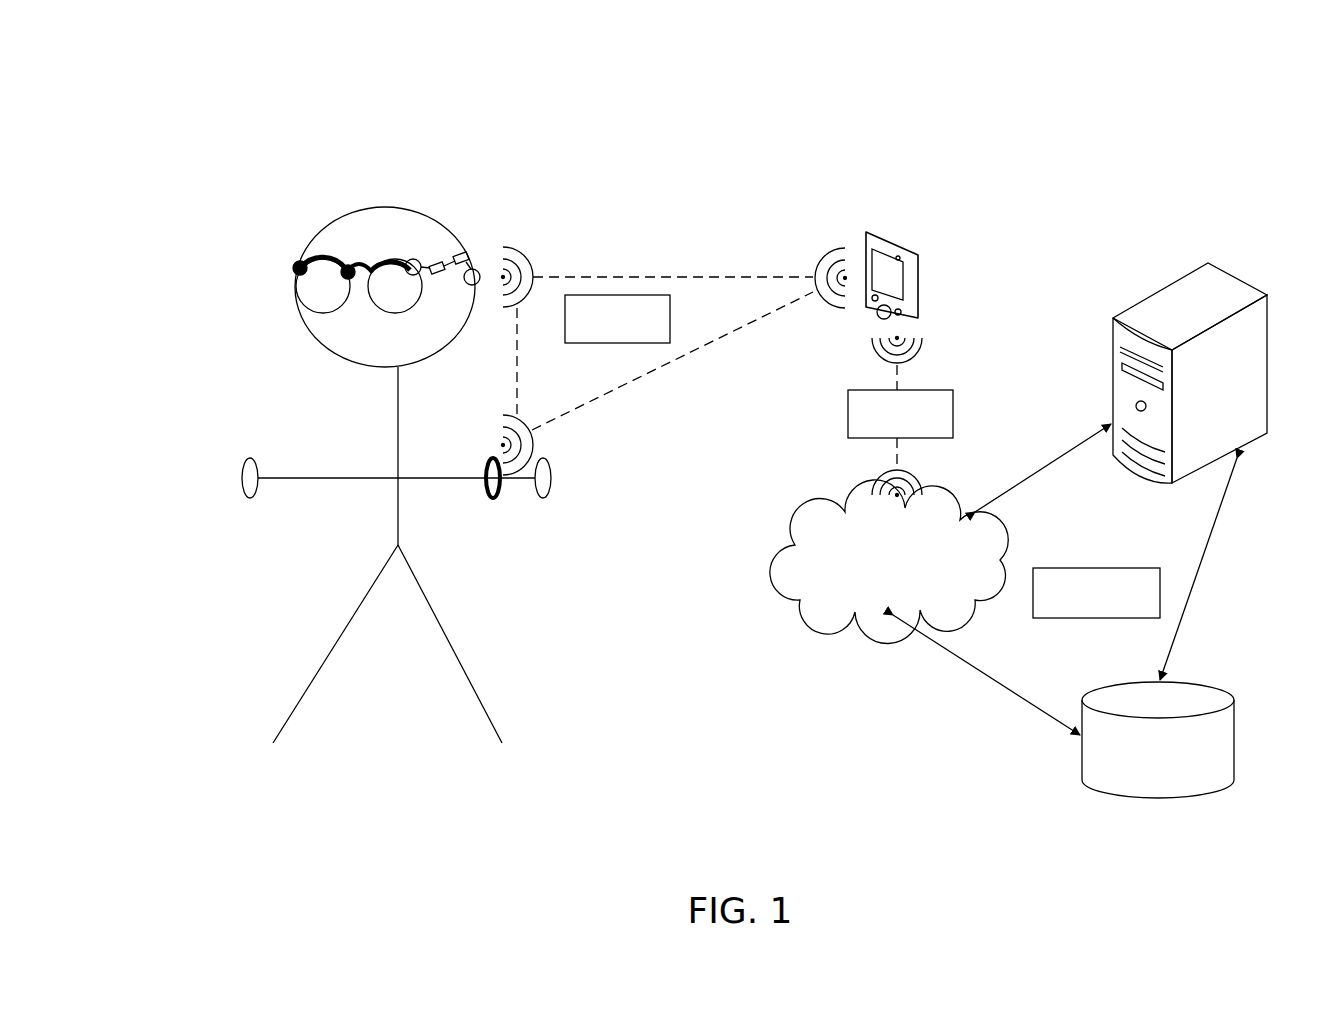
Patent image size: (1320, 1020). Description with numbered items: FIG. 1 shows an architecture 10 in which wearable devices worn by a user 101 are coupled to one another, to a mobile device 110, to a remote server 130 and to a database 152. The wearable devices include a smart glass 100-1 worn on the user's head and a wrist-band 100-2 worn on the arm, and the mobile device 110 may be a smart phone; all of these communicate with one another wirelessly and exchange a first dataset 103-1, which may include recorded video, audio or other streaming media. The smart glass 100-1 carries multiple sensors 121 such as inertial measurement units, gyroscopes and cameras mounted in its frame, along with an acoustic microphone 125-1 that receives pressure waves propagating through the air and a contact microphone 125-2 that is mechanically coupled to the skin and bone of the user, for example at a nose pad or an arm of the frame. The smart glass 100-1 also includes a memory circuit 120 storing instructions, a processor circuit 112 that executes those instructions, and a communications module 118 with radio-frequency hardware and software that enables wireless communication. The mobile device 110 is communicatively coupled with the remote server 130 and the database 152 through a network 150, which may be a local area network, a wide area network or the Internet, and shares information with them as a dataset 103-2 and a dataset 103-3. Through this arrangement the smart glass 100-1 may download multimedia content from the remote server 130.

The architecture 10 is at (1032, 72).
The user 101 is at (312, 683).
The smart glass 100-1 is at (396, 298).
The wrist-band 100-2 is at (491, 500).
The mobile device 110 is at (918, 258).
The processor circuit 112 is at (437, 262).
The communications module 118 is at (473, 286).
The memory circuit 120 is at (462, 252).
The sensors 121 is at (406, 262).
The acoustic microphone 125-1 is at (293, 270).
The contact microphone 125-2 is at (346, 264).
The first dataset 103-1 is at (650, 335).
The dataset 103-2 is at (933, 430).
The dataset 103-3 is at (1130, 607).
The remote server 130 is at (1197, 397).
The network 150 is at (870, 592).
The database 152 is at (1135, 724).